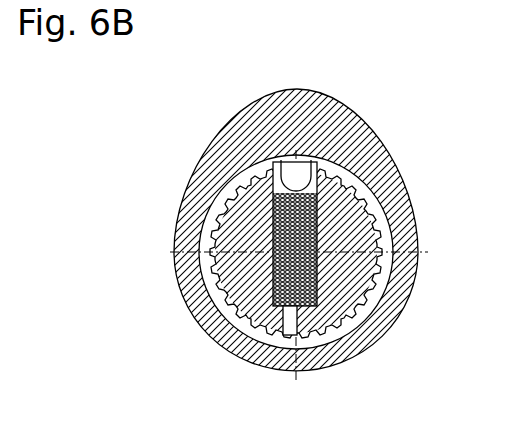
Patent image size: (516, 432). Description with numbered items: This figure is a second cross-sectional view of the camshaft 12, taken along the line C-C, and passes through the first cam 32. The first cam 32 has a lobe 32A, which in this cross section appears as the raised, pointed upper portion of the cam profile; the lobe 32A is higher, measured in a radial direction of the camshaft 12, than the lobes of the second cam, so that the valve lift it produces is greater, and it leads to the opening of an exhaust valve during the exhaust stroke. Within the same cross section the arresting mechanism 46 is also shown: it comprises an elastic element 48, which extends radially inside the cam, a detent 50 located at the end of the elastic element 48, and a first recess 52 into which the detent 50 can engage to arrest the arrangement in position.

The camshaft 12 is at (353, 283).
The first cam 32 is at (362, 122).
The lobe 32A is at (296, 89).
The arresting mechanism 46 is at (252, 225).
The elastic element 48 is at (273, 217).
The detent 50 is at (283, 161).
The first recess 52 is at (228, 319).